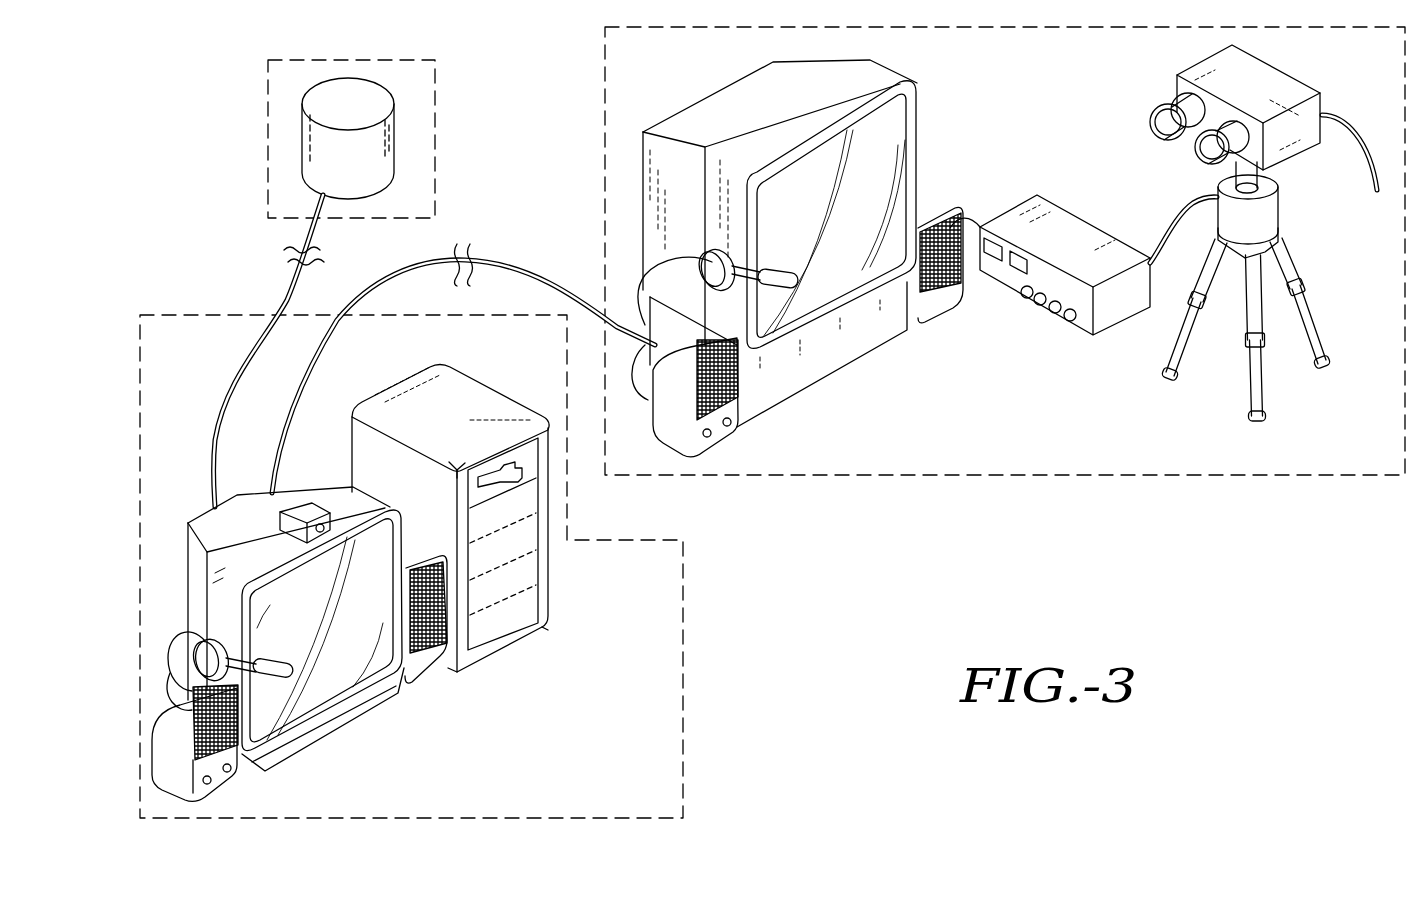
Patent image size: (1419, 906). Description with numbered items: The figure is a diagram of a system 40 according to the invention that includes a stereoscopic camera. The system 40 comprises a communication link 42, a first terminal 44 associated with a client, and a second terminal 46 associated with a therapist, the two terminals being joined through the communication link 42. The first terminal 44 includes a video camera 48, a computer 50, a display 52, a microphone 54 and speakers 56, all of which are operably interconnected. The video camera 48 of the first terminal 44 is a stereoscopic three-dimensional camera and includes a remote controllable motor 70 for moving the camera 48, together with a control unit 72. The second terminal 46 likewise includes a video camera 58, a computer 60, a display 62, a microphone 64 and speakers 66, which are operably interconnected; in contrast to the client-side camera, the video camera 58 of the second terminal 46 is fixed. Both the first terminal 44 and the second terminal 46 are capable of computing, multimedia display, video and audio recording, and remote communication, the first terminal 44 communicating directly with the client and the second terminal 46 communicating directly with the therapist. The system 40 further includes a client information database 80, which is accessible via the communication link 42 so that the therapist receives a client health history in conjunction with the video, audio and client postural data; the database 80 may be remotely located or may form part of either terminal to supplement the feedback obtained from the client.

The system 40 is at (585, 51).
The communication link 42 is at (398, 276).
The first terminal 44 is at (866, 478).
The second terminal 46 is at (684, 725).
The video camera 48 is at (1305, 78).
The computer 50 is at (815, 372).
The display 52 is at (883, 155).
The microphone 54 is at (745, 266).
The speakers 56 is at (725, 437).
The video camera 58 is at (305, 512).
The computer 60 is at (490, 397).
The display 62 is at (327, 687).
The microphone 64 is at (240, 652).
The speakers 66 is at (213, 800).
The remote controllable motor 70 is at (1265, 212).
The control unit 72 is at (1073, 230).
The client information database 80 is at (268, 117).